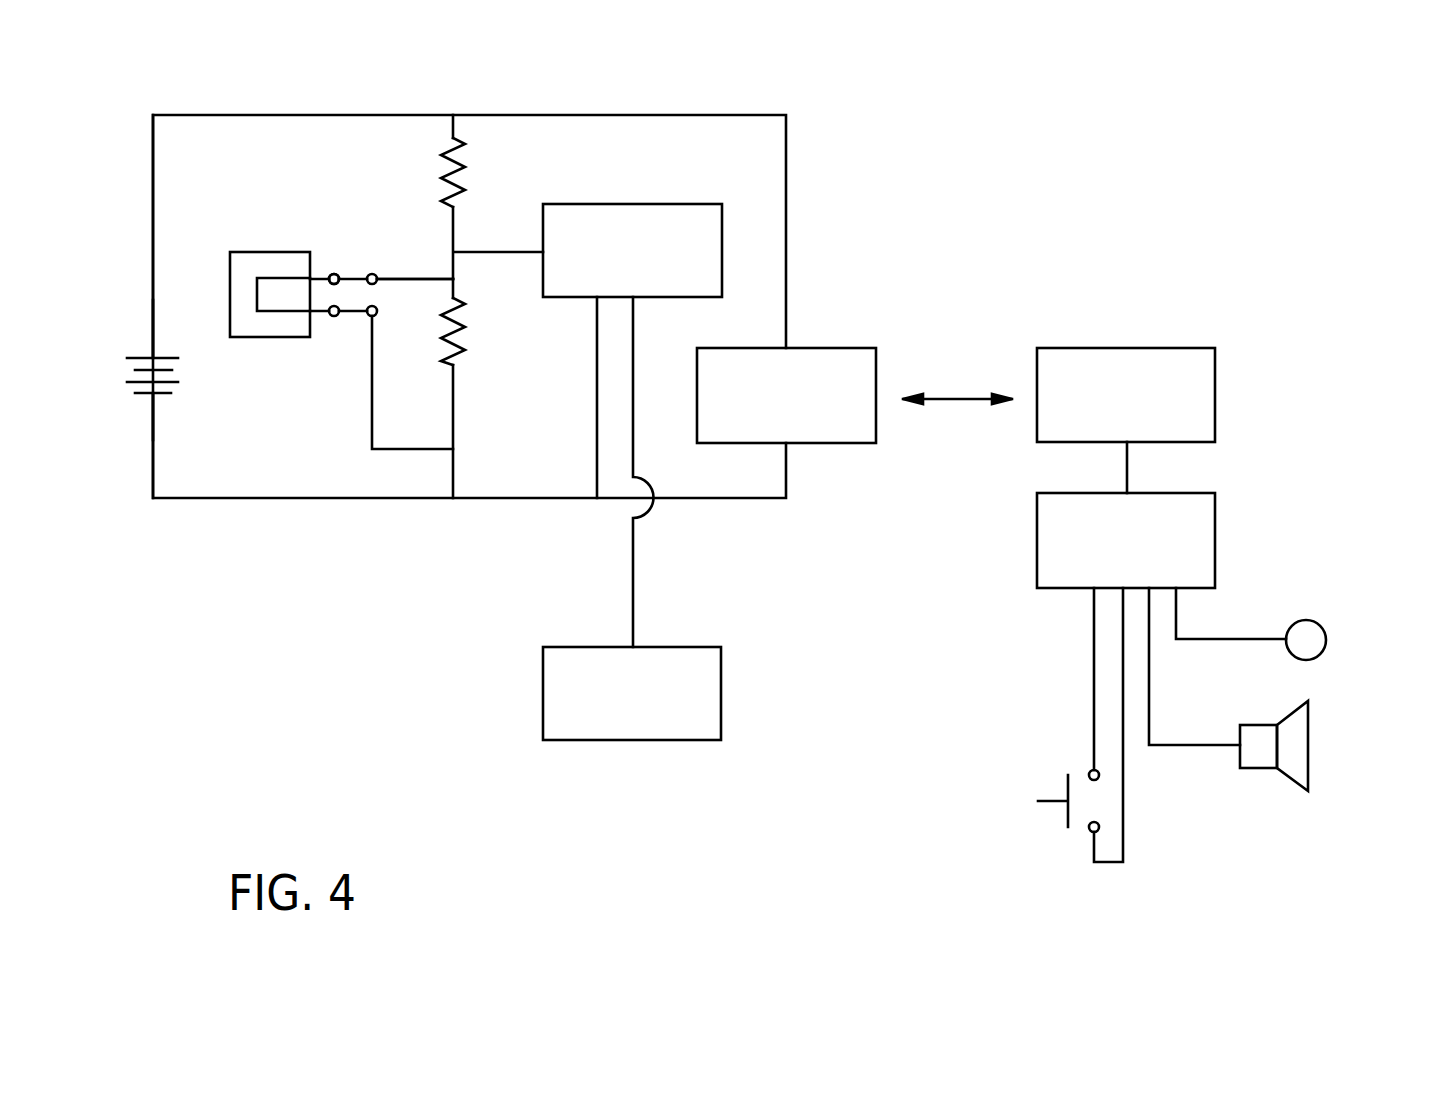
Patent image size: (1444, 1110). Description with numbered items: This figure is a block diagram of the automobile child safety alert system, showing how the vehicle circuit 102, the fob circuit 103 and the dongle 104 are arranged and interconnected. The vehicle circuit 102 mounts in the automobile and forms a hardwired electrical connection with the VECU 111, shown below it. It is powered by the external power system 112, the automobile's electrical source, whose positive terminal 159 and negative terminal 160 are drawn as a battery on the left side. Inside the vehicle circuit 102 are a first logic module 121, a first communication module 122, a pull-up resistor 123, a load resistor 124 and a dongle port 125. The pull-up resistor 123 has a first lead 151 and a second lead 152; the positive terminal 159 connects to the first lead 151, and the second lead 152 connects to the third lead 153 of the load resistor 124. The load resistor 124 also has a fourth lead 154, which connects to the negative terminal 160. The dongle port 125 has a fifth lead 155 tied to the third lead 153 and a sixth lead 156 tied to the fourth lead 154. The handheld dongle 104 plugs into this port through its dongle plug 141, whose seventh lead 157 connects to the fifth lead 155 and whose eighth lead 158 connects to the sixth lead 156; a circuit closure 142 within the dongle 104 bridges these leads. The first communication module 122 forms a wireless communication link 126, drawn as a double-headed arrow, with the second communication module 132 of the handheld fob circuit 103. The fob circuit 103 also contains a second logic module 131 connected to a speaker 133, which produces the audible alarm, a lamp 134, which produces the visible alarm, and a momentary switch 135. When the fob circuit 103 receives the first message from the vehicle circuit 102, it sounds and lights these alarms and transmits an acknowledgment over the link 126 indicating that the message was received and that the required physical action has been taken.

The vehicle circuit 102 is at (767, 115).
The fob circuit 103 is at (1179, 553).
The dongle 104 is at (262, 298).
The VECU 111 is at (721, 692).
The external power system 112 is at (173, 377).
The first logic module 121 is at (722, 243).
The first communication module 122 is at (873, 348).
The pull-up resistor 123 is at (465, 162).
The load resistor 124 is at (463, 322).
The dongle port 125 is at (371, 274).
The wireless communication link 126 is at (955, 399).
The second logic module 131 is at (1215, 537).
The second communication module 132 is at (1215, 395).
The speaker 133 is at (1308, 745).
The lamp 134 is at (1326, 640).
The momentary switch 135 is at (1058, 819).
The dongle plug 141 is at (348, 272).
The circuit closure 142 is at (257, 311).
The first lead 151 is at (453, 128).
The second lead 152 is at (455, 237).
The third lead 153 is at (455, 283).
The fourth lead 154 is at (455, 392).
The fifth lead 155 is at (418, 250).
The sixth lead 156 is at (377, 313).
The seventh lead 157 is at (331, 274).
The eighth lead 158 is at (333, 318).
The positive terminal 159 is at (153, 326).
The negative terminal 160 is at (150, 400).